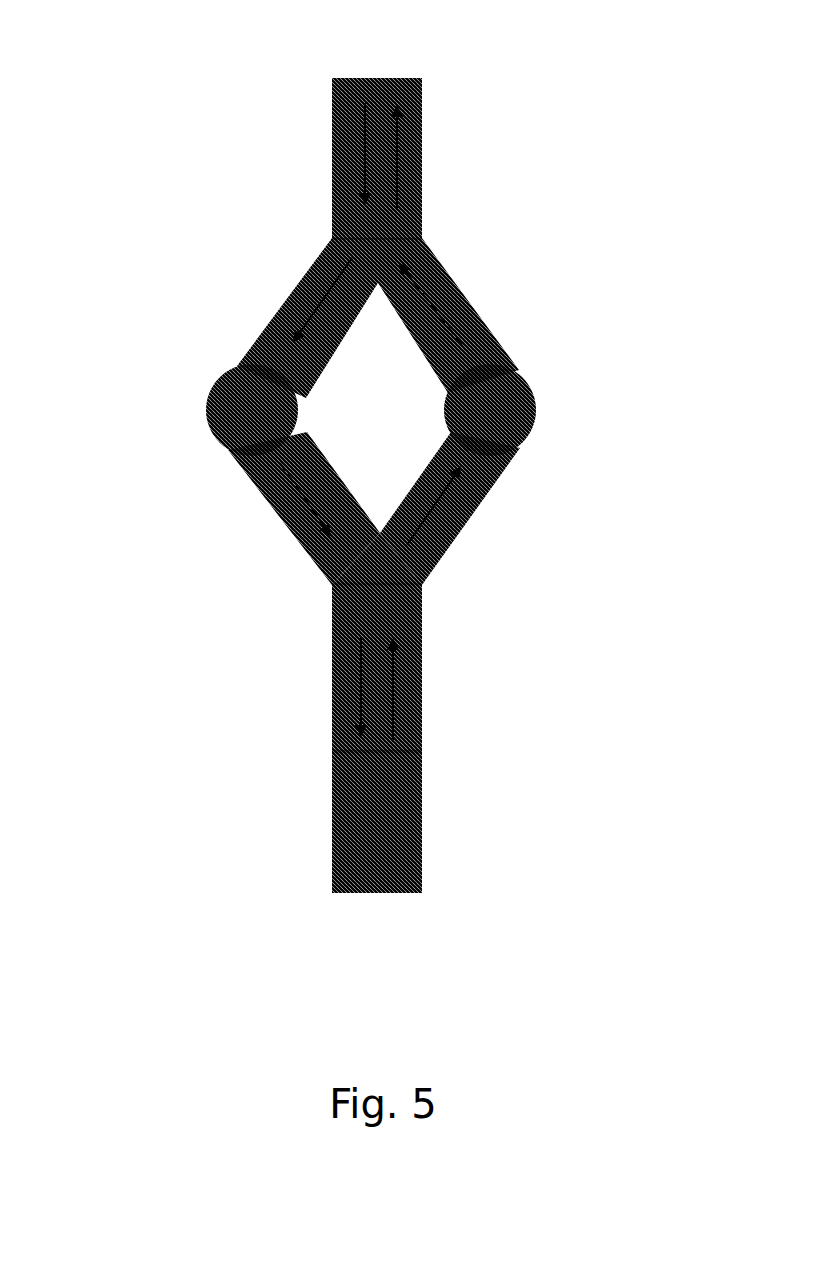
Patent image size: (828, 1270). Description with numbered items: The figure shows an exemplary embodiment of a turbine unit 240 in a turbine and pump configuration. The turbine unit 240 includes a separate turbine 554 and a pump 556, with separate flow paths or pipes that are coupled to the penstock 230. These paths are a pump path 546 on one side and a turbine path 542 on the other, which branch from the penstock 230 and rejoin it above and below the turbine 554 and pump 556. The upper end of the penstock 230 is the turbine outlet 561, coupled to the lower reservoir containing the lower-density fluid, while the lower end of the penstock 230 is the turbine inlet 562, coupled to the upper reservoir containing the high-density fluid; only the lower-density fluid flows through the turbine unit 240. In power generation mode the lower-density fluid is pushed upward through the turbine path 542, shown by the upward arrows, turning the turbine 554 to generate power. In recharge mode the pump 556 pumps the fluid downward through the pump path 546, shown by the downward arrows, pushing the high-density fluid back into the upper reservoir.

The turbine unit 240 is at (370, 512).
The pump 556 is at (210, 383).
The turbine 554 is at (518, 367).
The turbine outlet 561 is at (412, 145).
The turbine inlet 562 is at (400, 618).
The pump path 546 is at (292, 520).
The turbine path 542 is at (460, 522).
The penstock 230 is at (395, 855).